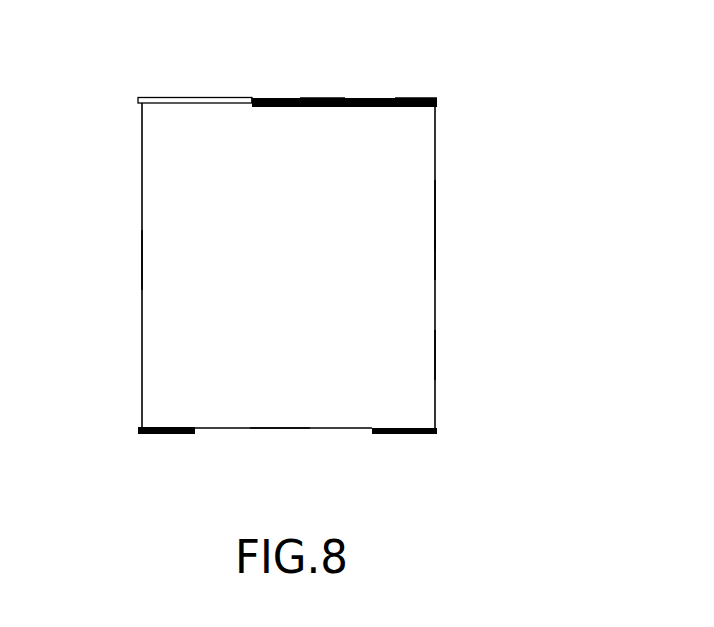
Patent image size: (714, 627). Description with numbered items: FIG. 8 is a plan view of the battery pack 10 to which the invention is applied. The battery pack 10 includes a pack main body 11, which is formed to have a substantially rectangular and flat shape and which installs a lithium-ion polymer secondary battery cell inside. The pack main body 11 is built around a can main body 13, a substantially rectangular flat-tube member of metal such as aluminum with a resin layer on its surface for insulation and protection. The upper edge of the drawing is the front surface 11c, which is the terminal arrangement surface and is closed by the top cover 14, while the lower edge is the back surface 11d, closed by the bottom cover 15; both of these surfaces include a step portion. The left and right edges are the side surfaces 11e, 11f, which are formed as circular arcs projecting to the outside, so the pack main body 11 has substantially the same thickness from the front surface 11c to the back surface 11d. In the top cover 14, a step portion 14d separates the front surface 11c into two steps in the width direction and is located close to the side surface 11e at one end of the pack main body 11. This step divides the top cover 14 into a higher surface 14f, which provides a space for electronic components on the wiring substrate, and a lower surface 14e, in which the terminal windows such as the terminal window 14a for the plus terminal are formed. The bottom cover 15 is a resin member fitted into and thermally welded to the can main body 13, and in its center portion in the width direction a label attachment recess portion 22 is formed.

The battery pack 10 is at (154, 88).
The pack main body 11 is at (404, 311).
The front surface 11c is at (323, 98).
The back surface 11d is at (277, 429).
The side surface 11e is at (141, 258).
The side surface 11f is at (437, 257).
The can main body 13 is at (423, 352).
The top cover 14 is at (365, 98).
The terminal window 14a is at (397, 212).
The step portion 14d is at (252, 98).
The lower surface 14e is at (412, 98).
The higher surface 14f is at (185, 98).
The bottom cover 15 is at (160, 434).
The label attachment recess portion 22 is at (343, 429).